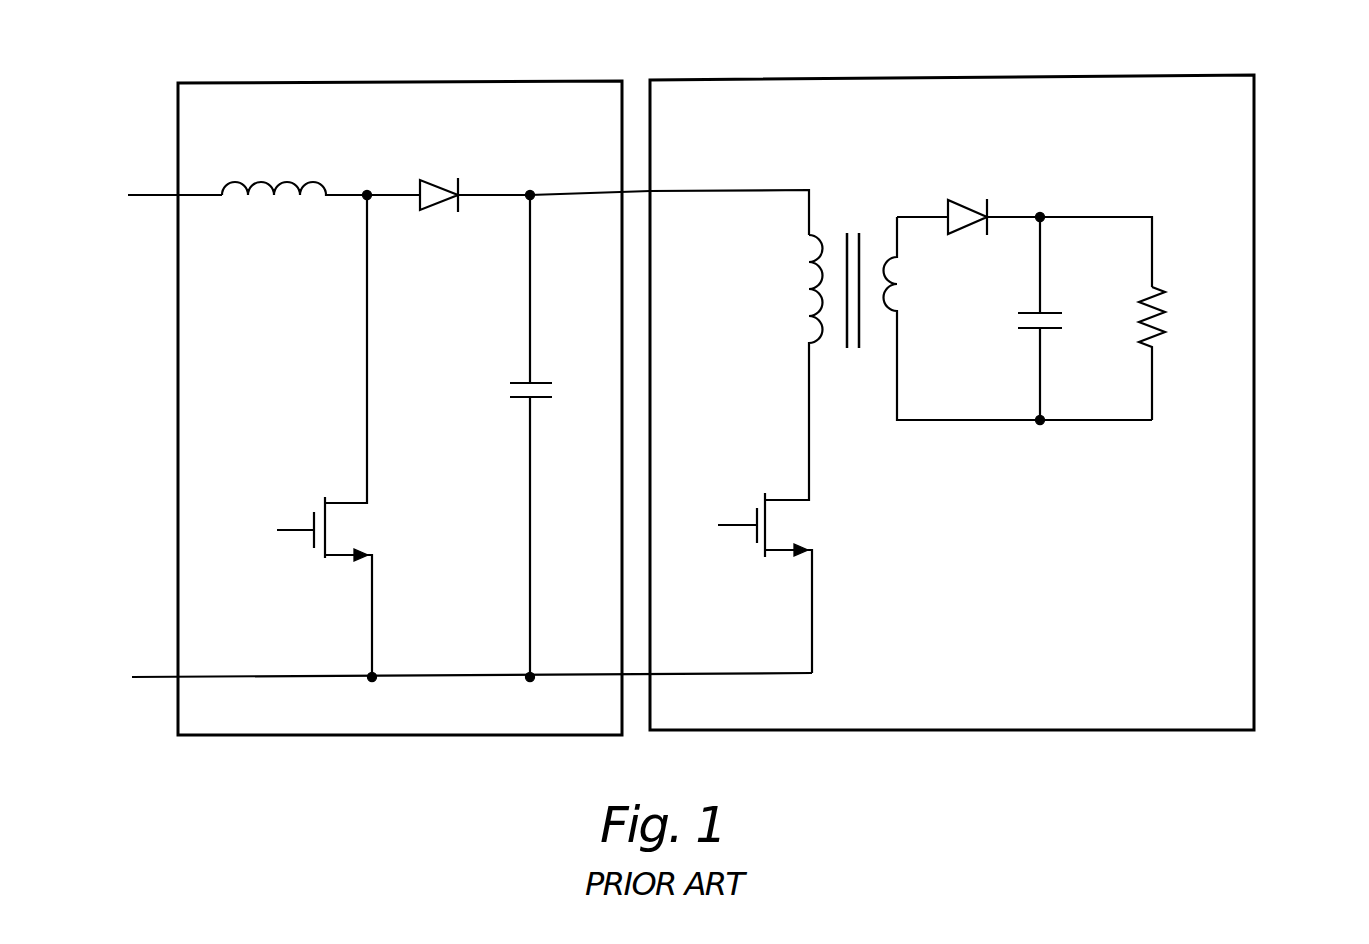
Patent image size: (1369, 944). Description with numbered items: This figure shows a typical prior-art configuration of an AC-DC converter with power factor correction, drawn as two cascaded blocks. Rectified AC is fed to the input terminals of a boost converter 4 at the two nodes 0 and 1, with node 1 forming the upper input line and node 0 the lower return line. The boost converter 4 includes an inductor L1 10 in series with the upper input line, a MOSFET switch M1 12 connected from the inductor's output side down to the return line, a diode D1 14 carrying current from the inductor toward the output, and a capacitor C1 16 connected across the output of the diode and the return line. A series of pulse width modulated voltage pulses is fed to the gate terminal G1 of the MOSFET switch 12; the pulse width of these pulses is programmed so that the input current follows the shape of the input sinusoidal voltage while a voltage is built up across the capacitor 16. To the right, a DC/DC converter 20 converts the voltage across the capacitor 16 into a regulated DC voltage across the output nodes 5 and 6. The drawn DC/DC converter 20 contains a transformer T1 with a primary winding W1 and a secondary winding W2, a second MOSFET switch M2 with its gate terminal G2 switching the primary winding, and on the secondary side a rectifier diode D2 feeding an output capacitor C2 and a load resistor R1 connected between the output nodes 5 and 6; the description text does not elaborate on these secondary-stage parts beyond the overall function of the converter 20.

The node 1 is at (134, 195).
The node 0 is at (150, 677).
The boost converter 4 is at (565, 82).
The inductor L1 10 is at (262, 190).
The inductor L1 is at (289, 165).
The diode D1 is at (448, 204).
The diode D1 14 is at (445, 203).
The capacitor C1 is at (499, 436).
The capacitor C1 16 is at (515, 400).
The MOSFET switch M1 is at (335, 436).
The MOSFET switch M1 12 is at (340, 557).
The gate terminal G1 is at (277, 512).
The DC/DC converter 20 is at (1258, 408).
The transformer T1 is at (939, 325).
The primary winding W1 is at (812, 298).
The secondary winding W2 is at (895, 297).
The rectifier diode D2 is at (952, 197).
The output capacitor C2 is at (1017, 322).
The load resistor R1 is at (1168, 313).
The output node 5 is at (1085, 213).
The output node 6 is at (1098, 420).
The switch transistor M2 is at (788, 574).
The gate of M2 G2 is at (719, 509).